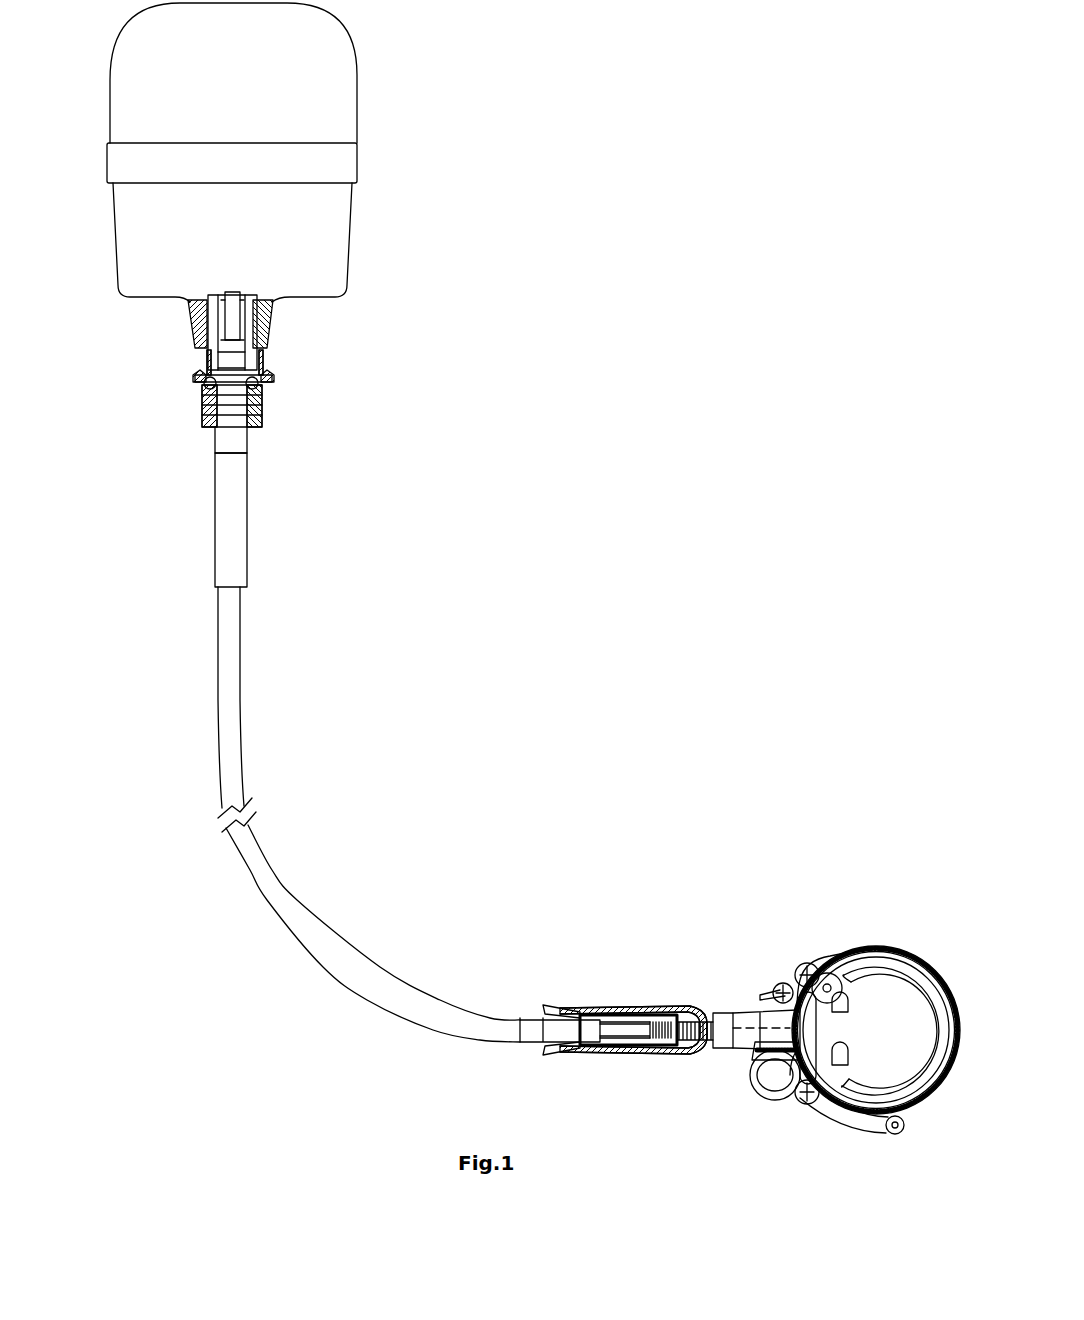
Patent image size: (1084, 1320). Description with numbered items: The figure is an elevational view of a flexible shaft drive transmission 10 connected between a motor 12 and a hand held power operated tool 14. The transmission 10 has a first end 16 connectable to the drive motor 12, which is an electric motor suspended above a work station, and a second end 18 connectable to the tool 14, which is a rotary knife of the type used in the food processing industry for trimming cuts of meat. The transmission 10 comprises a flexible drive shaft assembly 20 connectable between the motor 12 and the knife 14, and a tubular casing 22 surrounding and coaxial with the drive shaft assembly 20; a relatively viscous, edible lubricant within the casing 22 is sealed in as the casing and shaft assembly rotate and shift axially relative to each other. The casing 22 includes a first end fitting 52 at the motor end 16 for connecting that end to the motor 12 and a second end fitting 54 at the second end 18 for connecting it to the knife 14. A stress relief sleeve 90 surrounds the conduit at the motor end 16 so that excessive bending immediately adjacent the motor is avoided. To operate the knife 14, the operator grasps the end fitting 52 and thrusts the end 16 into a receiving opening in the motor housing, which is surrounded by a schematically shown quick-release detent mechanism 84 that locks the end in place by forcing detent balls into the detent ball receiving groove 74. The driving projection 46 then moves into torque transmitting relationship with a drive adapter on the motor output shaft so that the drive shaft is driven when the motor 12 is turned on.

The flexible shaft drive transmission 10 is at (318, 686).
The motor 12 is at (300, 104).
The power operated tool 14 is at (828, 930).
The first end 16 is at (270, 365).
The second end 18 is at (581, 995).
The flexible drive shaft assembly 20 is at (237, 617).
The tubular casing 22 is at (227, 670).
The driving projection 46 is at (237, 323).
The first end fitting 52 is at (220, 440).
The second end fitting 54 is at (615, 1028).
The detent ball receiving groove 74 is at (228, 385).
The detent mechanism 84 is at (193, 397).
The stress relief sleeve 90 is at (230, 538).